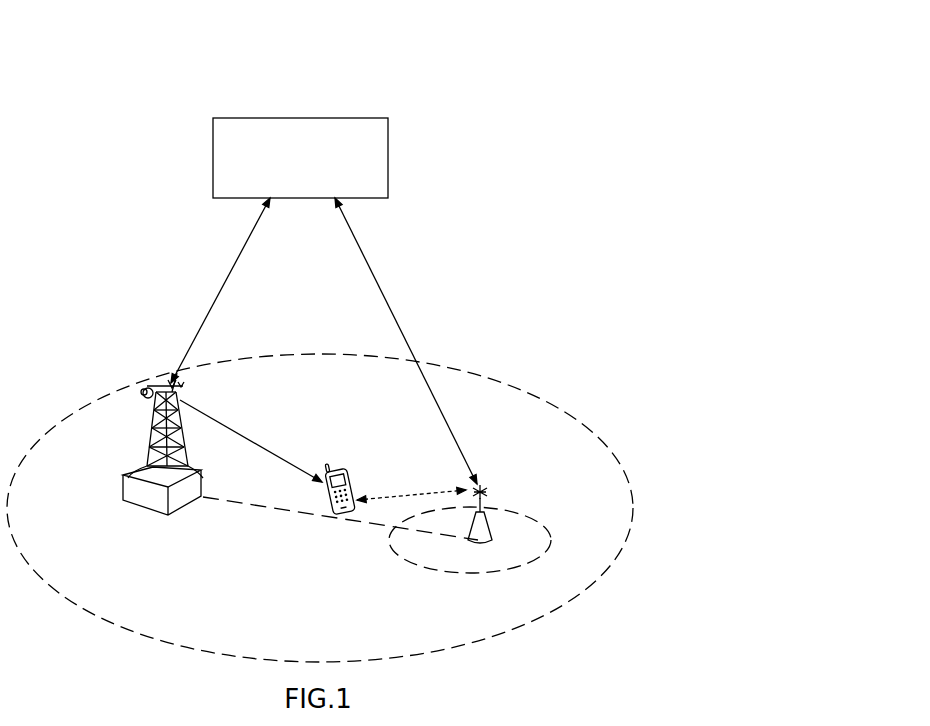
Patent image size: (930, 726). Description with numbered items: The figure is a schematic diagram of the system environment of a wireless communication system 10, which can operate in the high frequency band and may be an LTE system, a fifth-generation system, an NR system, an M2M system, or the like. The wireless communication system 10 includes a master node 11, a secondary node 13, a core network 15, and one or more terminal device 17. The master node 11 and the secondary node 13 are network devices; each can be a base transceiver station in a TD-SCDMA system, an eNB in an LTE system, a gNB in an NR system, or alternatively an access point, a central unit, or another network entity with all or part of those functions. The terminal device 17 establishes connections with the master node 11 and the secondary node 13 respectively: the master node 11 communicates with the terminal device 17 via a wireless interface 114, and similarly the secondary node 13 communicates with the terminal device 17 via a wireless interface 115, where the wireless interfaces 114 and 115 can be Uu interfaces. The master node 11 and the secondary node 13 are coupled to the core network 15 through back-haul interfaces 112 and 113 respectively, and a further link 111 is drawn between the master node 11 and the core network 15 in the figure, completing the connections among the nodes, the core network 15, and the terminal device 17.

The wireless communication system 10 is at (585, 40).
The master node 11 is at (183, 385).
The secondary node 13 is at (492, 490).
The core network 15 is at (337, 118).
The terminal device 17 is at (341, 465).
The link between base station and core network 111 is at (227, 279).
The back-haul interface 112 is at (390, 305).
The back-haul interface 113 is at (287, 518).
The wireless interface 114 is at (263, 446).
The wireless interface 115 is at (400, 493).